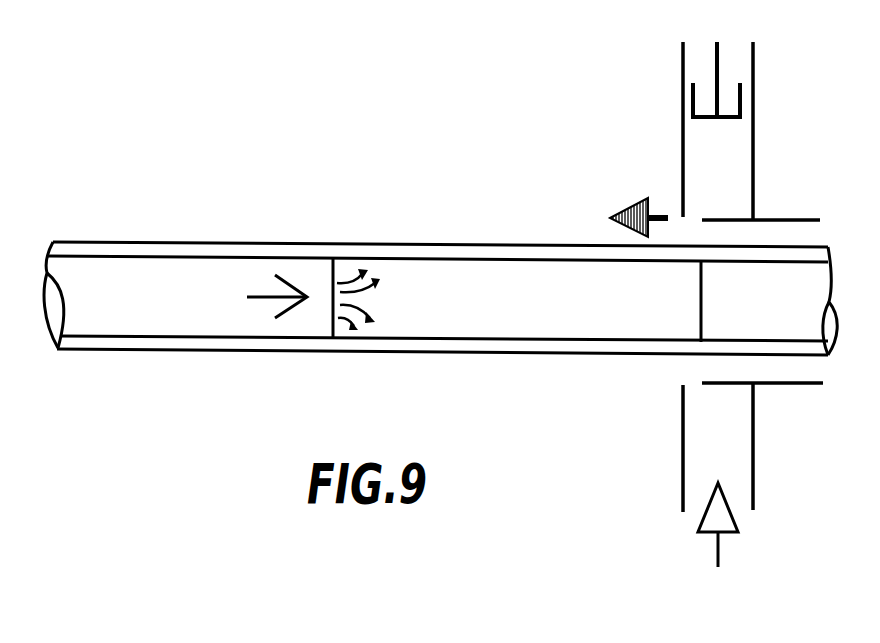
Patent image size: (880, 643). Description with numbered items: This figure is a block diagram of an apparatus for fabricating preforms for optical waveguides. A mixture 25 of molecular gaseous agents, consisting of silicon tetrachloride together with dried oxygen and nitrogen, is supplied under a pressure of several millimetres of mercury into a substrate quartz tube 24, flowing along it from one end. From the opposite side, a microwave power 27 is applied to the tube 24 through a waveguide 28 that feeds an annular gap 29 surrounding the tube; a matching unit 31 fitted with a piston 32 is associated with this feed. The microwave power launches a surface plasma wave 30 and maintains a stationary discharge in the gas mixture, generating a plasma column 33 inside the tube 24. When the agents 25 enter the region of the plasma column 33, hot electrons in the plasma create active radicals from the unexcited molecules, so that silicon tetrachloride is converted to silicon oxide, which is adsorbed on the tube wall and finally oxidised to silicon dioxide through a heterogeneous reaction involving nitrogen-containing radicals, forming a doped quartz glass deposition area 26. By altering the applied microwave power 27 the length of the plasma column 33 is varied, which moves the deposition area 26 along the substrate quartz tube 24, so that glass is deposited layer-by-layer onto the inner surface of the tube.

The substrate quartz tube 24 is at (181, 244).
The mixture of molecular gaseous agents 25 is at (222, 268).
The deposition area 26 is at (350, 283).
The microwave power 27 is at (722, 544).
The waveguide 28 is at (755, 461).
The annular gap 29 is at (790, 219).
The surface plasma wave 30 is at (642, 200).
The matching unit 31 is at (742, 143).
The piston 32 is at (742, 95).
The plasma column 33 is at (461, 275).